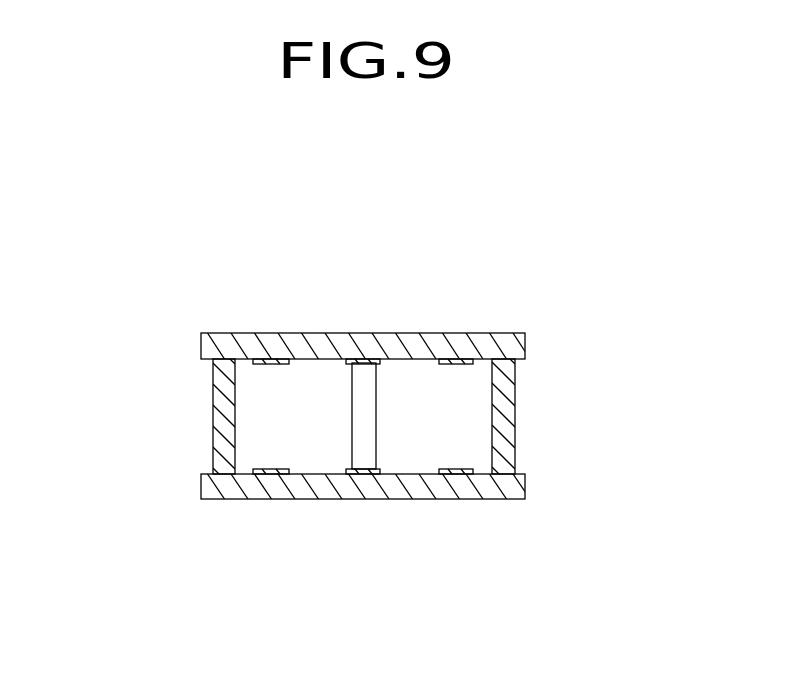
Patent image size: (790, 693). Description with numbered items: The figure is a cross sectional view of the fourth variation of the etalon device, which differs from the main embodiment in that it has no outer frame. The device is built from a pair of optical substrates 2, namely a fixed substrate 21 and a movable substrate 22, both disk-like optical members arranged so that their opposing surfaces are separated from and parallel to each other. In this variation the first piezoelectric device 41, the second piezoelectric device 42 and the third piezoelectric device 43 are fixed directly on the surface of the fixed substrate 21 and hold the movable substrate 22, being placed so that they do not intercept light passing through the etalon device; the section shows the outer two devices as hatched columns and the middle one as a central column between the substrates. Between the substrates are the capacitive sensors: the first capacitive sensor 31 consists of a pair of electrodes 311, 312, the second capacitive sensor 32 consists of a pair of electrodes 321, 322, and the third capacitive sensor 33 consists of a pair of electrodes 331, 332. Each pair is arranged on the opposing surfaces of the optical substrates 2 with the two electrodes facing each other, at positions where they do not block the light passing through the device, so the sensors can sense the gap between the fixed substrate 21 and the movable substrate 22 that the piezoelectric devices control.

The optical substrates 2 is at (367, 228).
The fixed substrate 21 is at (347, 343).
The movable substrate 22 is at (322, 482).
The first capacitive sensor 31 is at (102, 300).
The electrode 311 is at (212, 372).
The electrode 312 is at (212, 415).
The second capacitive sensor 32 is at (523, 200).
The electrode 321 is at (382, 360).
The electrode 322 is at (382, 470).
The third capacitive sensor 33 is at (625, 300).
The electrode 331 is at (513, 372).
The electrode 332 is at (503, 414).
The first piezoelectric device 41 is at (212, 450).
The second piezoelectric device 42 is at (353, 433).
The third piezoelectric device 43 is at (513, 449).